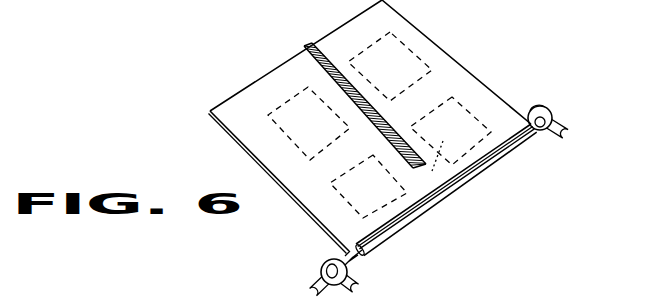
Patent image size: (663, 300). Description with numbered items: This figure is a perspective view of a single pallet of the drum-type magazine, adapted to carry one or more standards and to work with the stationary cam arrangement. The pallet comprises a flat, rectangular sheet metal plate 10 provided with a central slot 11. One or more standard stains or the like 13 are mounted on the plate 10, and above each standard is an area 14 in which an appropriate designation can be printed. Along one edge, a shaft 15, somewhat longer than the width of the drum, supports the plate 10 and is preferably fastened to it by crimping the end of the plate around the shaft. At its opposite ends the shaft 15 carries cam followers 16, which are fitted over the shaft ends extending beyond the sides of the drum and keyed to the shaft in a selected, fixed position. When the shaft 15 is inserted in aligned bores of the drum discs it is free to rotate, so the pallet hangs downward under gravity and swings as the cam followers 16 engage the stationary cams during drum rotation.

The flat rectangular sheet metal plate 10 is at (319, 200).
The central slot 11 is at (308, 48).
The standard stains 13 is at (286, 111).
The area 14 is at (403, 178).
The shaft 15 is at (357, 261).
The cam followers 16 is at (322, 265).